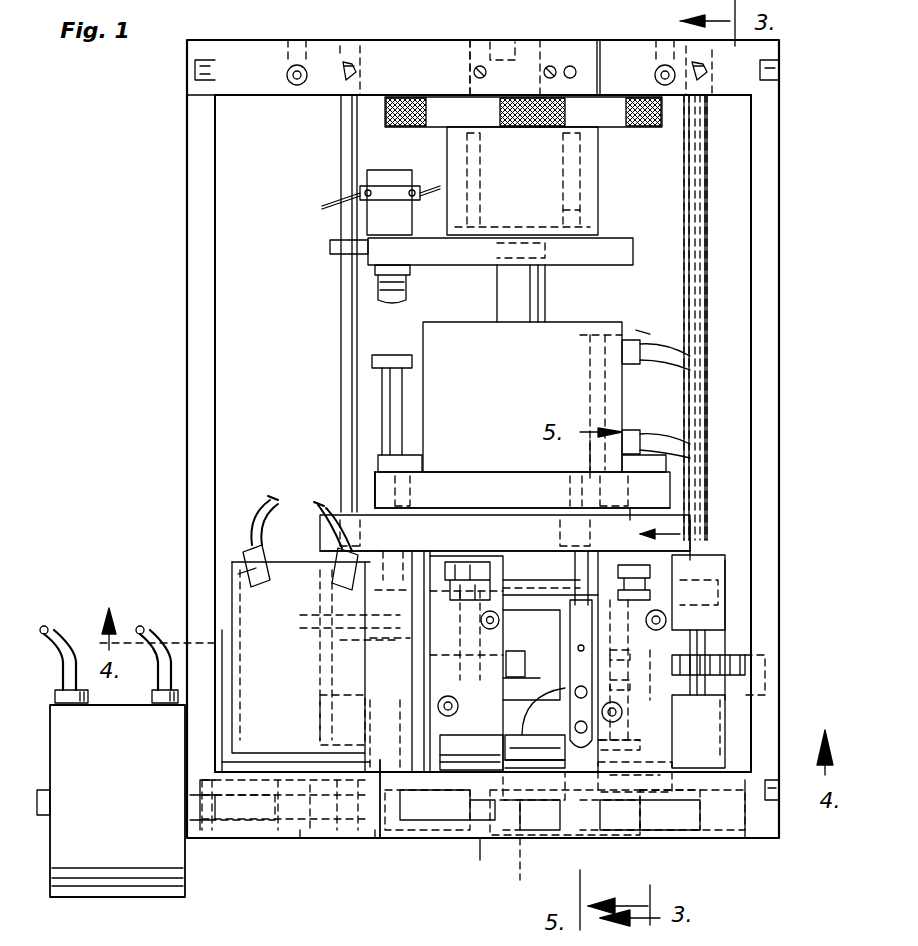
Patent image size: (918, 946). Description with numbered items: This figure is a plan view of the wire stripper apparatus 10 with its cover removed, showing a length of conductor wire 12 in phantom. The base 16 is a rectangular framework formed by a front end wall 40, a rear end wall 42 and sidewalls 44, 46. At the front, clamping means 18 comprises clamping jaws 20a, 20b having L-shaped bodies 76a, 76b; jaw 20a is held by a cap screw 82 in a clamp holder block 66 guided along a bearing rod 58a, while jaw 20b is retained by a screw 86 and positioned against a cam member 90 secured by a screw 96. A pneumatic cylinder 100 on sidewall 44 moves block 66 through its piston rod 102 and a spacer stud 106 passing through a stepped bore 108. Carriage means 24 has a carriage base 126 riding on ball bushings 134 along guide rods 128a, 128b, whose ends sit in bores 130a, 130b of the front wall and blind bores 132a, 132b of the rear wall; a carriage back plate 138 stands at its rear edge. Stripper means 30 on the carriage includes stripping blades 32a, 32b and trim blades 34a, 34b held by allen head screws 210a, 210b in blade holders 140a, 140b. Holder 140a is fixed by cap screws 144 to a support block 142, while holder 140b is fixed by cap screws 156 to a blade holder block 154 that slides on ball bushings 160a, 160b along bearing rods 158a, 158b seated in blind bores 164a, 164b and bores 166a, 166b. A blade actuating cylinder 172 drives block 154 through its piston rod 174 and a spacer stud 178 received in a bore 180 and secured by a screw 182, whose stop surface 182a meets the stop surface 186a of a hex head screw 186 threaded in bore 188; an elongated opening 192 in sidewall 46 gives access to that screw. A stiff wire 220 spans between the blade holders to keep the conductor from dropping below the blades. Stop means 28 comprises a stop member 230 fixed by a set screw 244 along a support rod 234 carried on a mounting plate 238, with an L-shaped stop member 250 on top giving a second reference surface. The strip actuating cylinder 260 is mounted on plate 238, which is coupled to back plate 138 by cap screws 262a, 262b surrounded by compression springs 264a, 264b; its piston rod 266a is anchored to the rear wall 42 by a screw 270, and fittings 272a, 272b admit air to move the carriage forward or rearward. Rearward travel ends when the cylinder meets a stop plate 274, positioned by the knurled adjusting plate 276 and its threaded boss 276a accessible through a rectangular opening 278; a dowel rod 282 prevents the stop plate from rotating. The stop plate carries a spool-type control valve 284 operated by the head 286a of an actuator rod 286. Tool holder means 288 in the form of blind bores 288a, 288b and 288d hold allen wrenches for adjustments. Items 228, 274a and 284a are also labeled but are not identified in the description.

The wire stripper apparatus 10 is at (92, 200).
The electrical conductor wire 12 is at (528, 874).
The base means 16 is at (190, 322).
The clamping means 18 is at (494, 860).
The clamping jaw 20a is at (520, 850).
The clamping jaw 20b is at (596, 846).
The carriage means 24 is at (686, 534).
The stop means 28 is at (559, 646).
The stripper means 30 is at (376, 842).
The stripping blade 32a is at (635, 777).
The stripping blade 32b is at (536, 793).
The trim blade 34a is at (619, 745).
The trim blade 34b is at (537, 767).
The front end wall 40 is at (242, 848).
The rear end wall 42 is at (255, 62).
The sidewall 44 is at (192, 370).
The sidewall 46 is at (768, 252).
The bearing rod 58a is at (552, 842).
The clamp holder block 66 is at (386, 828).
The L-shaped body 76a is at (430, 840).
The L-shaped body 76b is at (680, 850).
The cap screw 82 is at (470, 860).
The screw 86 is at (644, 840).
The cam member 90 is at (746, 842).
The screw 96 is at (706, 850).
The double acting pneumatic cylinder 100 is at (82, 880).
The actuating piston rod 102 is at (192, 842).
The spacer stud 106 is at (252, 840).
The stepped bore 108 is at (306, 850).
The carriage base 126 is at (730, 576).
The bearing rod 128a is at (343, 392).
The bearing rod 128b is at (708, 400).
The bore 130a is at (348, 840).
The bore 130b is at (750, 792).
The blind bore 132a is at (346, 60).
The blind bore 132b is at (696, 60).
The ball bushing 134 is at (740, 612).
The carriage back plate 138 is at (380, 508).
The blade holder 140a is at (700, 644).
The blade holder 140b is at (502, 604).
The blade holder support block 142 is at (700, 540).
The cap screws 144 is at (622, 712).
The blade holder block 154 is at (495, 556).
The cap screws 156 is at (492, 660).
The bearing rod 158a is at (535, 736).
The bearing rod 158b is at (580, 560).
The ball bushing 160a is at (471, 750).
The ball bushing 160b is at (430, 612).
The blind bore 164a is at (698, 731).
The blind bore 164b is at (612, 491).
The bore 166a is at (382, 760).
The bore 166b is at (322, 630).
The blade actuating cylinder 172 is at (292, 560).
The actuating piston rod 174 is at (345, 672).
The spacer stud 178 is at (345, 648).
The bore 180 is at (342, 720).
The screw 182 is at (466, 664).
The stop surface 182a is at (518, 650).
The hex head screw 186 is at (745, 668).
The stop surface 186a is at (518, 700).
The threaded bore 188 is at (655, 675).
The elongated opening 192 is at (770, 684).
The allen head screw 210a is at (730, 590).
The allen head screw 210b is at (505, 533).
The wire 220 is at (700, 786).
The plate 228 is at (470, 758).
The stop member 230 is at (580, 648).
The support rod 234 is at (572, 552).
The mounting plate 238 is at (380, 482).
The set screw 244 is at (650, 626).
The L-shaped stop member 250 is at (562, 692).
The strip actuating cylinder 260 is at (622, 376).
The cap screw 262a is at (666, 462).
The cap screw 262b is at (412, 464).
The coil compression spring 264a is at (640, 512).
The coil compression spring 264b is at (522, 490).
The piston rod 266a is at (540, 290).
The screw 270 is at (512, 58).
The fitting 272a is at (645, 432).
The fitting 272b is at (645, 342).
The stop plate 274 is at (618, 262).
The plate part 274a is at (590, 210).
The adjusting plate 276 is at (391, 187).
The threaded annular boss 276a is at (590, 182).
The rectangular opening 278 is at (596, 145).
The dowel rod 282 is at (330, 252).
The spool-type control valve 284 is at (378, 208).
The nut 284a is at (376, 296).
The actuator rod 286 is at (382, 392).
The head 286a is at (372, 360).
The tool holder means 288 is at (552, 65).
The blind bore 288a is at (474, 66).
The blind bore 288b is at (474, 30).
The blind bore 288d is at (572, 66).